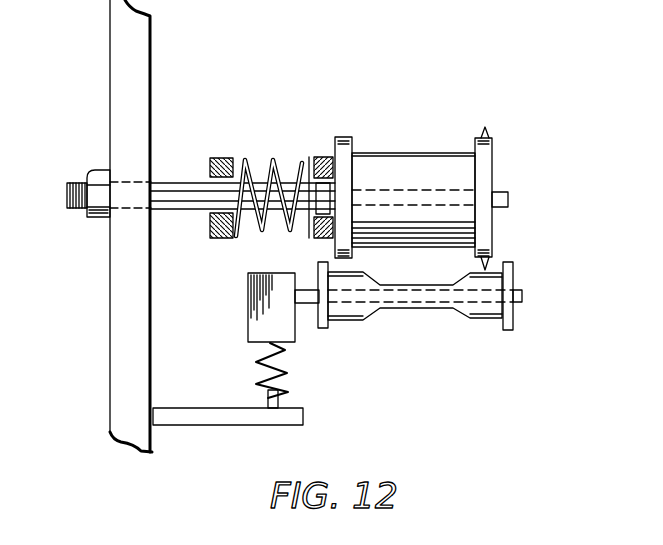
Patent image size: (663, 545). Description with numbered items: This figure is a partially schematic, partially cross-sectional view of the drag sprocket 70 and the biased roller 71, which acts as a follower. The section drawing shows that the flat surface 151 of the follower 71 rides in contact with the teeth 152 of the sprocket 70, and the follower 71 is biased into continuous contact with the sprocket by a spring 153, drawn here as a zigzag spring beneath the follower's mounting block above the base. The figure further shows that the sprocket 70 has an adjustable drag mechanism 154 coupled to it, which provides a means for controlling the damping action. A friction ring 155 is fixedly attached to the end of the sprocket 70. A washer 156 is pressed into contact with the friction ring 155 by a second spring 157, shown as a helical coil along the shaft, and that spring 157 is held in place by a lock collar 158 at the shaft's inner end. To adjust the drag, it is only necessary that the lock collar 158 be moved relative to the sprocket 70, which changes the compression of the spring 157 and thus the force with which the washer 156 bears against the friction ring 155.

The drag sprocket 70 is at (467, 177).
The biased roller 71 is at (507, 283).
The flat surface 151 is at (482, 318).
The teeth 152 is at (486, 126).
The spring 153 is at (290, 358).
The adjustable drag mechanism 154 is at (271, 103).
The friction ring 155 is at (327, 155).
The washer 156 is at (303, 159).
The spring 157 is at (272, 164).
The lock collar 158 is at (212, 157).